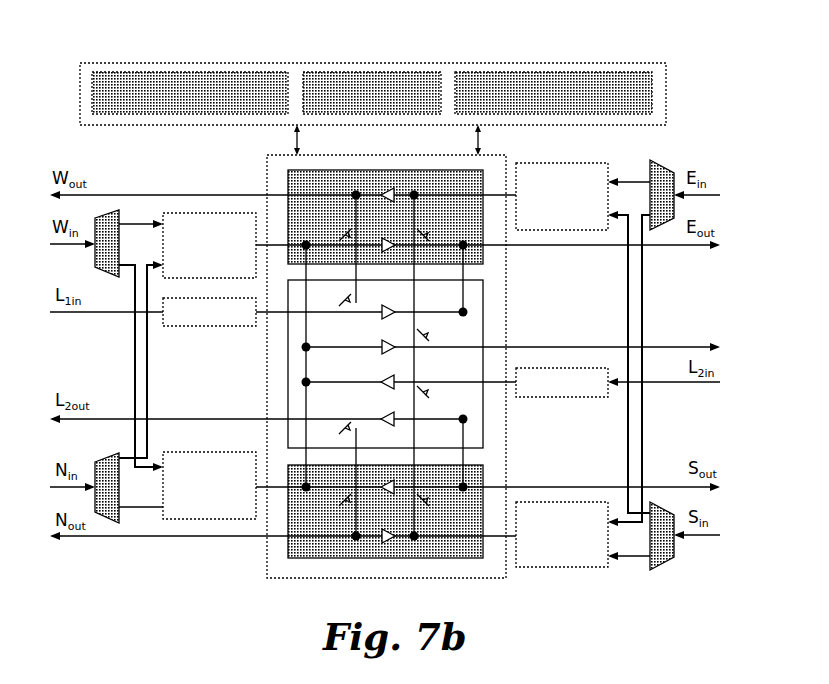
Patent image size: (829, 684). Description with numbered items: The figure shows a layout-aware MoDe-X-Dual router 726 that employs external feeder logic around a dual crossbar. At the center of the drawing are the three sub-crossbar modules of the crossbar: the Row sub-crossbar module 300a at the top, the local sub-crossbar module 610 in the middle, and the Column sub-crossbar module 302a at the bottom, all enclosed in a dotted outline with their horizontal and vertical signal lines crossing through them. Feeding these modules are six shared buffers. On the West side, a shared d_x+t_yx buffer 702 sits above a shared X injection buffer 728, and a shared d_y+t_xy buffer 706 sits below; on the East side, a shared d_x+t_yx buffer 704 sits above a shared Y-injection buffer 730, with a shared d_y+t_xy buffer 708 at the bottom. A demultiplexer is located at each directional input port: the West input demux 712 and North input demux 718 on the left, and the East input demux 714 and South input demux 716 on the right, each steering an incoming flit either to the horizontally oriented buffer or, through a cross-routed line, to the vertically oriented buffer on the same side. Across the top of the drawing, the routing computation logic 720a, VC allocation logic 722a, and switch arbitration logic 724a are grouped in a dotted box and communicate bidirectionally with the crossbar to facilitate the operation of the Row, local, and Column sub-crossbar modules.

The routing computation logic 720a is at (125, 73).
The VC allocation logic 722a is at (350, 73).
The switch arbitration logic 724a is at (586, 73).
The MoDe-X-Dual router 726 is at (732, 73).
The Row sub-crossbar module 300a is at (485, 170).
The Column sub-crossbar module 302a is at (310, 560).
The local sub-crossbar module 610 is at (478, 411).
The shared d_x+t_yx buffer 702 is at (236, 212).
The shared d_x+t_yx buffer 704 is at (585, 164).
The shared d_y+t_xy buffer 706 is at (244, 452).
The shared d_y+t_xy buffer 708 is at (563, 568).
The West input demux 712 is at (98, 265).
The East input demux 714 is at (666, 173).
The South input demux 716 is at (662, 562).
The North input demux 718 is at (106, 463).
The shared X injection buffer 728 is at (188, 327).
The shared Y-injection buffer 730 is at (560, 398).